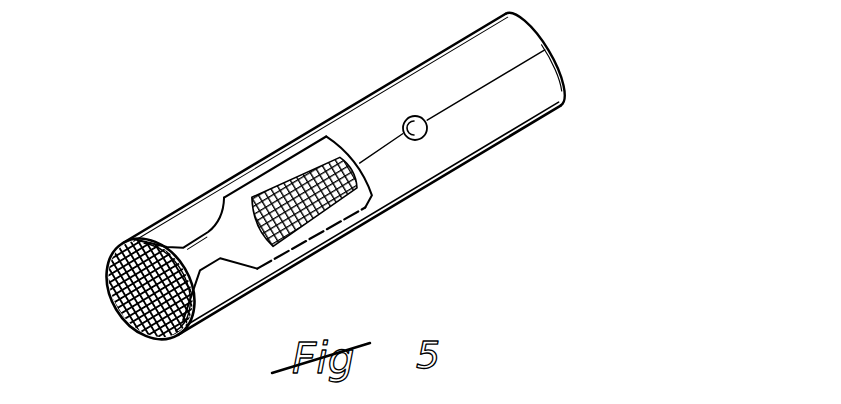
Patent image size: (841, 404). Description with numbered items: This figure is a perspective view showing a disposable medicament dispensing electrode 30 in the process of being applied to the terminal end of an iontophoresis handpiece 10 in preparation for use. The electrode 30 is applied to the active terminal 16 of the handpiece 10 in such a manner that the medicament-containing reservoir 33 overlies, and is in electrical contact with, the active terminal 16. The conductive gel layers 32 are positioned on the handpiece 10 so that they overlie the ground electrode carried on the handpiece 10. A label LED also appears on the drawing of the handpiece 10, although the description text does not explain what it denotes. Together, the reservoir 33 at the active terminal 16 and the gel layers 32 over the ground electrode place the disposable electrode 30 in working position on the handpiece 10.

The iontophoresis handpiece 10 is at (480, 159).
The active terminal 16 is at (152, 242).
The disposable electrode 30 is at (250, 124).
The conductive gel layers 32 is at (313, 157).
The medicament-containing reservoir 33 is at (107, 258).
The light emitting diode LED is at (410, 117).